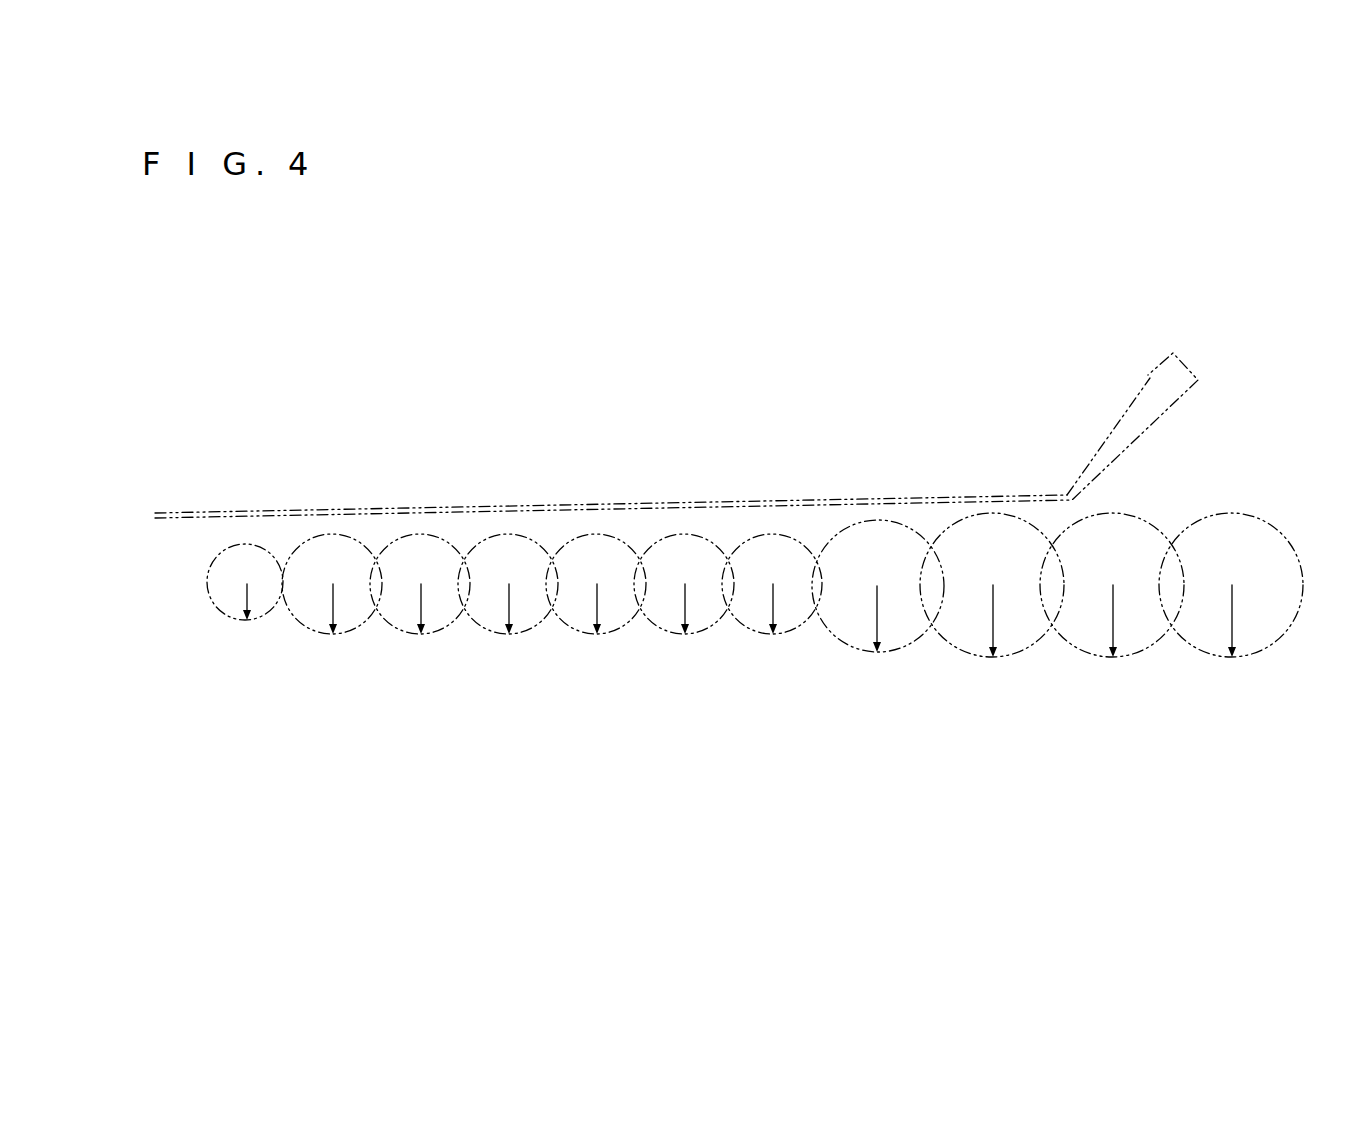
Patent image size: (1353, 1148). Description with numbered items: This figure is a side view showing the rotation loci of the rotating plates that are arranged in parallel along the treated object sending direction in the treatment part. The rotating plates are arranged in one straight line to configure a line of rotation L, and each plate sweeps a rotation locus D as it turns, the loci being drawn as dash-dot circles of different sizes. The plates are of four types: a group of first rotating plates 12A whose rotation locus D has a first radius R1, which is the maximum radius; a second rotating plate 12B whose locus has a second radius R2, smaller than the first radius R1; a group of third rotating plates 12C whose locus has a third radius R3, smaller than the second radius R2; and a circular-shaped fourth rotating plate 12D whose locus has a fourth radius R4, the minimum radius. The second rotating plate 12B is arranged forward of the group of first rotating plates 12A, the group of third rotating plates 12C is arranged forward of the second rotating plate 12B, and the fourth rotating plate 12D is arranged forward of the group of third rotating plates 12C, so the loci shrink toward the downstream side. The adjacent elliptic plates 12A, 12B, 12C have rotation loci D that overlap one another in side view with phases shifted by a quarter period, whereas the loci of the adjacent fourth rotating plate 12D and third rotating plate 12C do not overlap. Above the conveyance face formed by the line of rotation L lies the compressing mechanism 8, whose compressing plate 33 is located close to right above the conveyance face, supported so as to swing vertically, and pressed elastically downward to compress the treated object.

The compressing mechanism 8 is at (647, 435).
The compressing plate 33 is at (186, 512).
The line of rotation L is at (675, 756).
The rotation locus D is at (746, 628).
The first rotating plate 12A is at (984, 654).
The second rotating plate 12B is at (870, 649).
The third rotating plate 12C is at (324, 631).
The fourth rotating plate 12D is at (237, 617).
The first radius R1 is at (1127, 621).
The second radius R2 is at (891, 619).
The third radius R3 is at (567, 609).
The fourth radius R4 is at (261, 602).